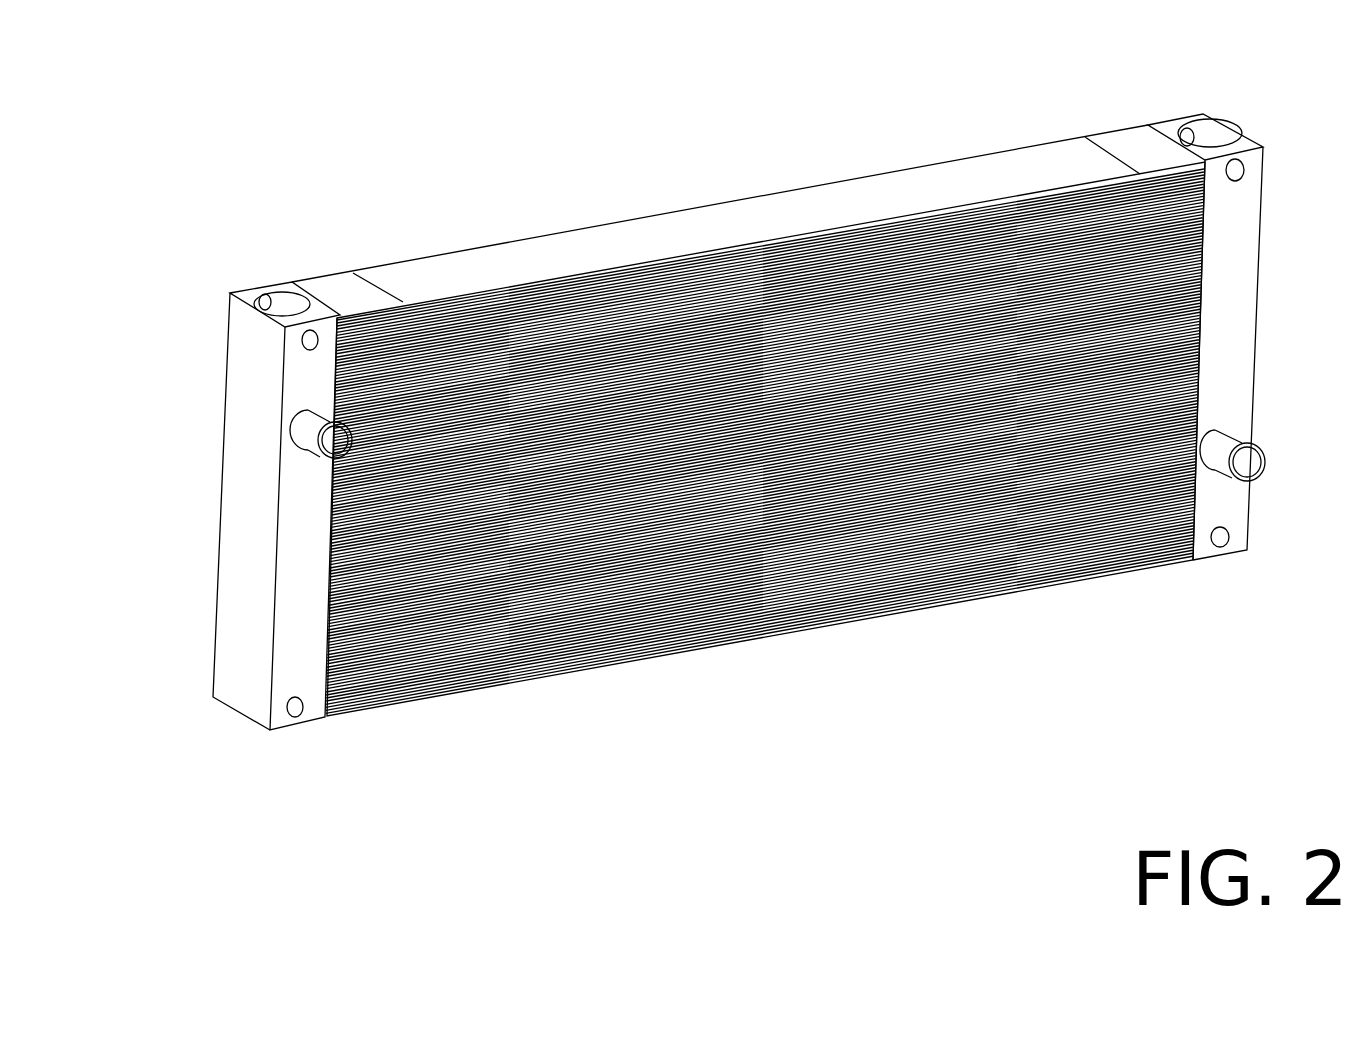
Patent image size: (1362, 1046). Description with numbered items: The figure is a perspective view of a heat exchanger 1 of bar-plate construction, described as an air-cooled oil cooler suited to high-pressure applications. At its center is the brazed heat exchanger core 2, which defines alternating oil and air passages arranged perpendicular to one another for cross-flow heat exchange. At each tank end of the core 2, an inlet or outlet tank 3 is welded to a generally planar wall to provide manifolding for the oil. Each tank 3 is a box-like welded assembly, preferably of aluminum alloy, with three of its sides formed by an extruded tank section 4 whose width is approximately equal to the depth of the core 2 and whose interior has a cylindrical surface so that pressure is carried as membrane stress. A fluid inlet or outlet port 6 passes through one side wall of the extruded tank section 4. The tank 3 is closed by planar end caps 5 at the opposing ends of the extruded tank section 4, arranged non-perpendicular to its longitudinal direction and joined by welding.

The heat exchanger 1 is at (822, 155).
The heat exchanger core 2 is at (885, 582).
The tank 3 is at (247, 697).
The extruded tank section 4 is at (240, 318).
The planar end cap 5 is at (292, 308).
The fluid inlet or outlet port 6 is at (315, 455).